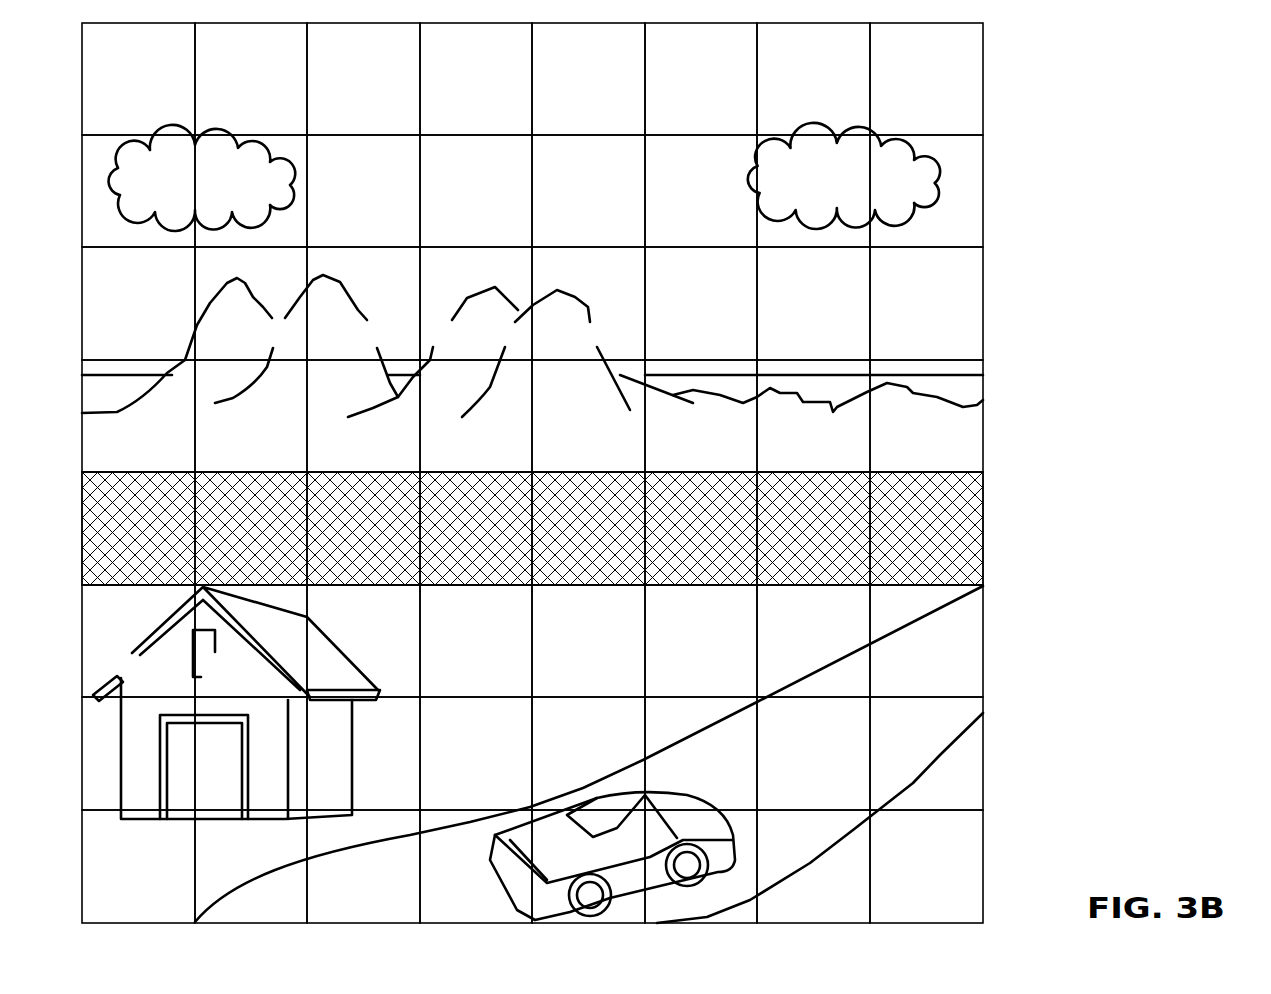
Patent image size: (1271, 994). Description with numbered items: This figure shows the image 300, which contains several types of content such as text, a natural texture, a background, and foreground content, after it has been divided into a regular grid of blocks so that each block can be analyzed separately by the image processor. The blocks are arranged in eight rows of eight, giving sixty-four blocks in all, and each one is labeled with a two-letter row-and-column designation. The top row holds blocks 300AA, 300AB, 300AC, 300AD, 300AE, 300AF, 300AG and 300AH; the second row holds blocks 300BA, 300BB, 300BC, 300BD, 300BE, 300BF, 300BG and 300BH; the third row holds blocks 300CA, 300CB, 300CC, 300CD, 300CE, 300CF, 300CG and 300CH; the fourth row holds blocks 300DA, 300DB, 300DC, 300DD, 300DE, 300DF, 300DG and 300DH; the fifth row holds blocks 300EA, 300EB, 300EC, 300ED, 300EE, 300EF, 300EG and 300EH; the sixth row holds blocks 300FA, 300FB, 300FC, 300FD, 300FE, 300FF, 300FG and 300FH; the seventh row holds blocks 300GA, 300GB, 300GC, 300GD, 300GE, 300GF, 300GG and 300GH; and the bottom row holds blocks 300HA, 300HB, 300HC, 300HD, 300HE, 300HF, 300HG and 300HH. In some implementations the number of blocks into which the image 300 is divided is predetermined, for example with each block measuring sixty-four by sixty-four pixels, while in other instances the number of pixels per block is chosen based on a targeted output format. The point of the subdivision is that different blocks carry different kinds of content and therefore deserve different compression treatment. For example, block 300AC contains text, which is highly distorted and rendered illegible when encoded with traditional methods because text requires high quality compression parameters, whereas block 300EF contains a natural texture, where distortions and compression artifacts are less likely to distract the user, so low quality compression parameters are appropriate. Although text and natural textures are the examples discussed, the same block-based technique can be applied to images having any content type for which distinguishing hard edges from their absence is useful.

The image 300 is at (995, 93).
The block 300AA is at (183, 57).
The block 300AB is at (296, 57).
The block 300AC is at (408, 57).
The block 300AD is at (521, 57).
The block 300AE is at (633, 57).
The block 300AF is at (746, 57).
The block 300AG is at (858, 57).
The block 300AH is at (971, 57).
The block 300BA is at (183, 247).
The block 300BB is at (296, 247).
The block 300BC is at (408, 247).
The block 300BD is at (521, 247).
The block 300BE is at (633, 247).
The block 300BF is at (746, 247).
The block 300BG is at (858, 247).
The block 300BH is at (971, 247).
The block 300CA is at (183, 347).
The block 300CB is at (296, 347).
The block 300CC is at (408, 347).
The block 300CD is at (521, 347).
The block 300CE is at (633, 347).
The block 300CF is at (746, 347).
The block 300CG is at (858, 347).
The block 300CH is at (971, 347).
The block 300DA is at (183, 457).
The block 300DB is at (296, 457).
The block 300DC is at (408, 457).
The block 300DD is at (521, 457).
The block 300DE is at (633, 457).
The block 300DF is at (746, 457).
The block 300DG is at (858, 457).
The block 300DH is at (971, 457).
The block 300EA is at (183, 541).
The block 300EB is at (296, 541).
The block 300EC is at (408, 541).
The block 300ED is at (521, 541).
The block 300EE is at (633, 541).
The block 300EF is at (746, 541).
The block 300EG is at (858, 541).
The block 300EH is at (971, 541).
The block 300FA is at (183, 681).
The block 300FB is at (296, 681).
The block 300FC is at (408, 681).
The block 300FD is at (521, 681).
The block 300FE is at (633, 681).
The block 300FF is at (746, 681).
The block 300FG is at (858, 681).
The block 300FH is at (971, 681).
The block 300GA is at (183, 787).
The block 300GB is at (296, 787).
The block 300GC is at (408, 787).
The block 300GD is at (521, 787).
The block 300GE is at (633, 787).
The block 300GF is at (746, 787).
The block 300GG is at (858, 787).
The block 300GH is at (971, 787).
The block 300HA is at (183, 864).
The block 300HB is at (296, 864).
The block 300HC is at (408, 899).
The block 300HD is at (521, 899).
The block 300HE is at (630, 864).
The block 300HF is at (745, 919).
The block 300HG is at (858, 864).
The block 300HH is at (971, 864).